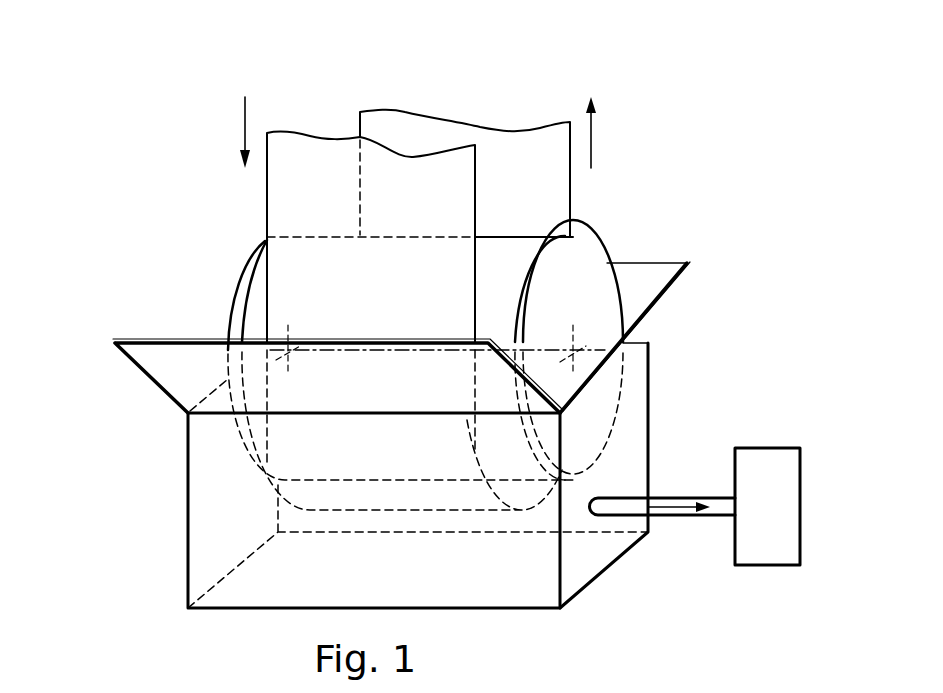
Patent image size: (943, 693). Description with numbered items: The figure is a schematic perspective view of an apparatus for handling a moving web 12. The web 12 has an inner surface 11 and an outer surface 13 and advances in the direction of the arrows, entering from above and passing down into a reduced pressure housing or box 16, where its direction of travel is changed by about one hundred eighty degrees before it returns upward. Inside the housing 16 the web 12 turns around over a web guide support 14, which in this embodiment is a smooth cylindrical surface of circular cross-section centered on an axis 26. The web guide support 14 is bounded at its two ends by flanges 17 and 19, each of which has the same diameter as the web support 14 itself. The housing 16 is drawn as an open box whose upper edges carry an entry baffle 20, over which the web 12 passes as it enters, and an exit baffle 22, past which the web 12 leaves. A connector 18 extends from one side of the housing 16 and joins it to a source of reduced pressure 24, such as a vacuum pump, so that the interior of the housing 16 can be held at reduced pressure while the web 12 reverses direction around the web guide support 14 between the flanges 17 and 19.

The inner surface 11 is at (538, 186).
The moving web 12 is at (479, 90).
The outer surface 13 is at (328, 208).
The web guide support 14 is at (256, 285).
The reduced pressure housing or box 16 is at (203, 545).
The flange 17 is at (584, 257).
The connector 18 is at (680, 515).
The flange 19 is at (228, 300).
The entry baffle 20 is at (165, 340).
The exit baffle 22 is at (667, 277).
The source of reduced pressure 24 is at (768, 465).
The axis 26 is at (597, 352).